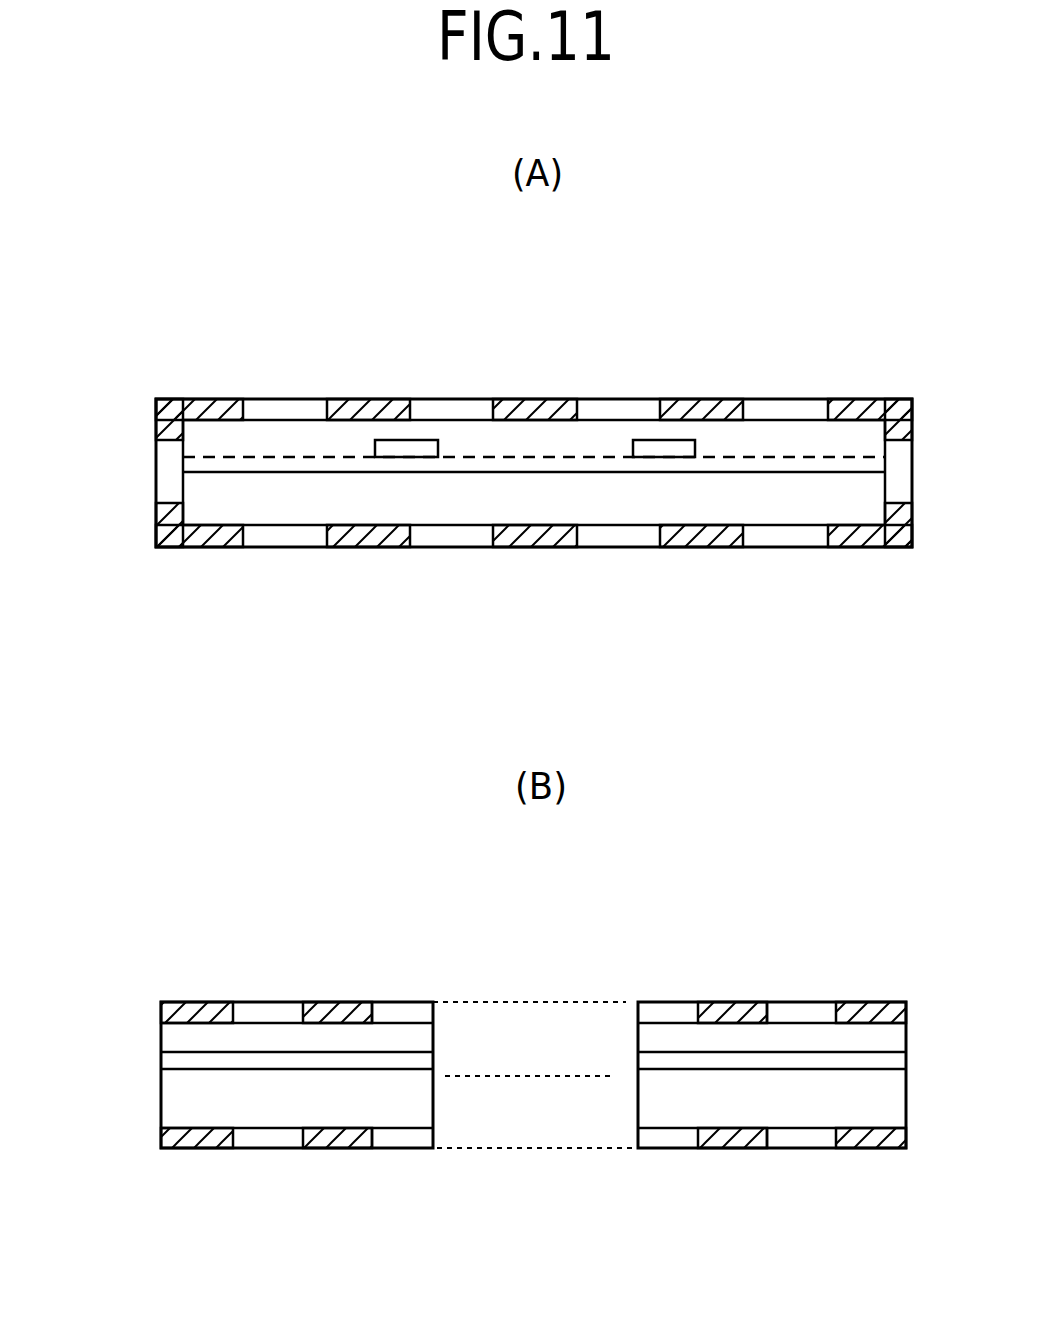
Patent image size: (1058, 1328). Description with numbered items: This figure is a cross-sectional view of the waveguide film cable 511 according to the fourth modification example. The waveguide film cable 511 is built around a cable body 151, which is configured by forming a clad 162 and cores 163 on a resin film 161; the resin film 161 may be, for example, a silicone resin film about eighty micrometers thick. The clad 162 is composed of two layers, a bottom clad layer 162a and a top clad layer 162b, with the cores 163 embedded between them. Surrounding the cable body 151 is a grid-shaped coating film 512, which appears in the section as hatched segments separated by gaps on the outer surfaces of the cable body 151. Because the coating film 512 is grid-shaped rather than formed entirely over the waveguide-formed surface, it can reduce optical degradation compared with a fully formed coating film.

The waveguide film cable 511 is at (253, 283).
The coating film 512 is at (800, 393).
The cable body 151 is at (285, 511).
The resin film 161 is at (452, 507).
The clad 162 is at (893, 637).
The bottom clad layer 162a is at (722, 468).
The top clad layer 162b is at (853, 443).
The cores 163 is at (405, 440).